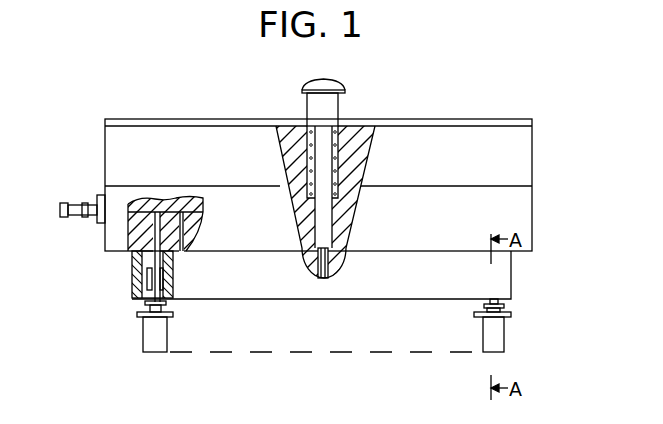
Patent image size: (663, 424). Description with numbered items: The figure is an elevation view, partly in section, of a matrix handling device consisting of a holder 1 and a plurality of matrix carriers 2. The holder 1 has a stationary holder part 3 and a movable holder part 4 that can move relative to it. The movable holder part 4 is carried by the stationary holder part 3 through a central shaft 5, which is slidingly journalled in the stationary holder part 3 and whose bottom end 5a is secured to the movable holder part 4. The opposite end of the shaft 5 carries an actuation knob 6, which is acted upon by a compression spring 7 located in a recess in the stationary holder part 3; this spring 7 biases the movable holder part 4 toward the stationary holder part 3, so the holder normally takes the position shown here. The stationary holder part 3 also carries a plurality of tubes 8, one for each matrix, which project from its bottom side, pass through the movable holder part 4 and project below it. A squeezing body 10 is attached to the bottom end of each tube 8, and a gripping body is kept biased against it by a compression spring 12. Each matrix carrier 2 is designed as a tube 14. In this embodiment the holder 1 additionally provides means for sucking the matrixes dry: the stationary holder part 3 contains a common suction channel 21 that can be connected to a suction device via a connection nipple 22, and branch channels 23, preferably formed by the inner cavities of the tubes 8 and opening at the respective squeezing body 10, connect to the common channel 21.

The holder 1 is at (483, 118).
The matrix carrier 2 is at (141, 336).
The stationary holder part 3 is at (533, 160).
The movable holder part 4 is at (498, 281).
The central shaft 5 is at (323, 223).
The bottom end 5a is at (337, 267).
The actuation knob 6 is at (322, 79).
The compression spring 7 is at (335, 145).
The tube 8 is at (153, 301).
The squeezing body 10 is at (481, 307).
The compression spring 12 is at (148, 280).
The tube 14 is at (163, 332).
The common suction channel 21 is at (165, 211).
The connection nipple 22 is at (63, 202).
The branch channel 23 is at (168, 243).